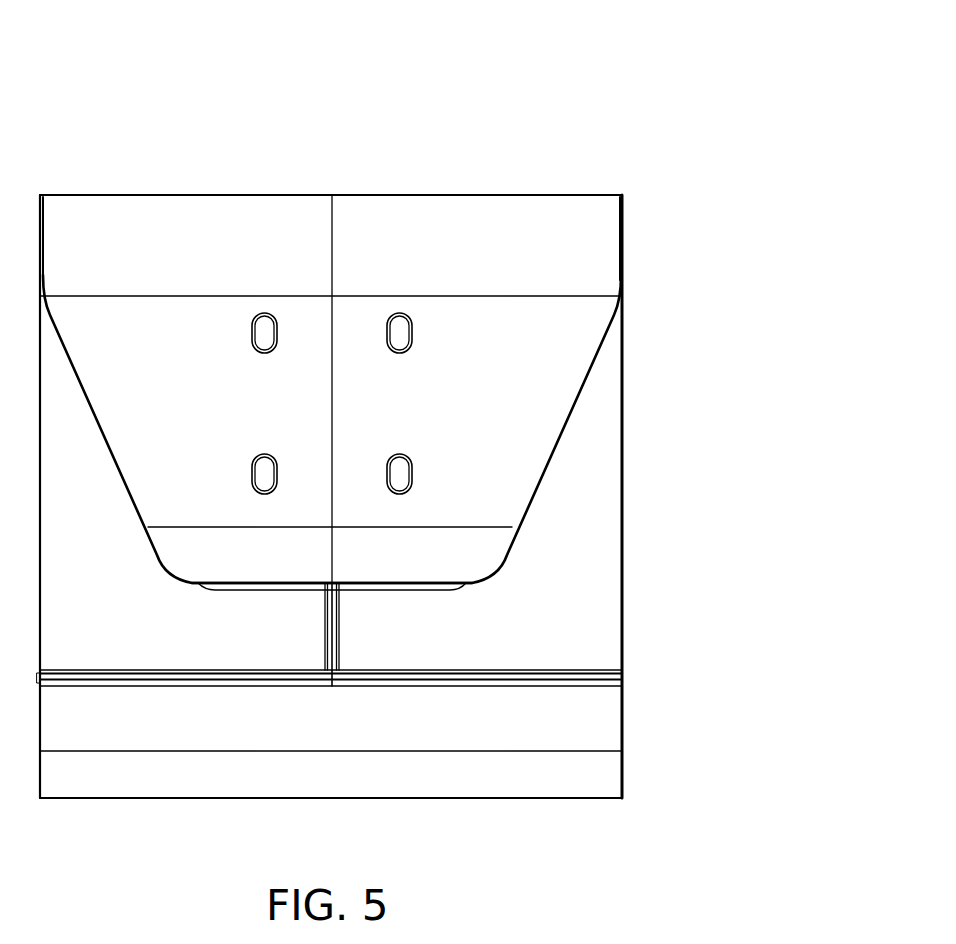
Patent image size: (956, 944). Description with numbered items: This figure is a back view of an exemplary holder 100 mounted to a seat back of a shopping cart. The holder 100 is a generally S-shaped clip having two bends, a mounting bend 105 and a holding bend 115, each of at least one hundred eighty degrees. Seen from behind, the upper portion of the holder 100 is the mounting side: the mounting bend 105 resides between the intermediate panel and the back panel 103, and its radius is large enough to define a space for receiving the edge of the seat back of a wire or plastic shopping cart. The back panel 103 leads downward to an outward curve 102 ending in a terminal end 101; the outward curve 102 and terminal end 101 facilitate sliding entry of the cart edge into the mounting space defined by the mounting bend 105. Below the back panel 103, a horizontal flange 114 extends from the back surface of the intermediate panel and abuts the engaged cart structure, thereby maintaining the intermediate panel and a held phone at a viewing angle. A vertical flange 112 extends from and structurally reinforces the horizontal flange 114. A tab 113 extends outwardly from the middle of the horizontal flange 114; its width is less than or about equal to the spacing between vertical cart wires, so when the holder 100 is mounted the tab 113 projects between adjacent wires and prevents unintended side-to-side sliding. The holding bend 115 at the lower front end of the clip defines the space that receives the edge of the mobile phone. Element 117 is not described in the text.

The holder 100 is at (332, 168).
The mounting bend 105 is at (483, 190).
The back panel 103 is at (549, 332).
The outward curve 102 is at (508, 525).
The terminal end 101 is at (455, 585).
The vertical flange 112 is at (326, 637).
The tab 113 is at (332, 683).
The horizontal flange 114 is at (537, 680).
The lower panel 117 is at (595, 730).
The holding bend 115 is at (307, 800).